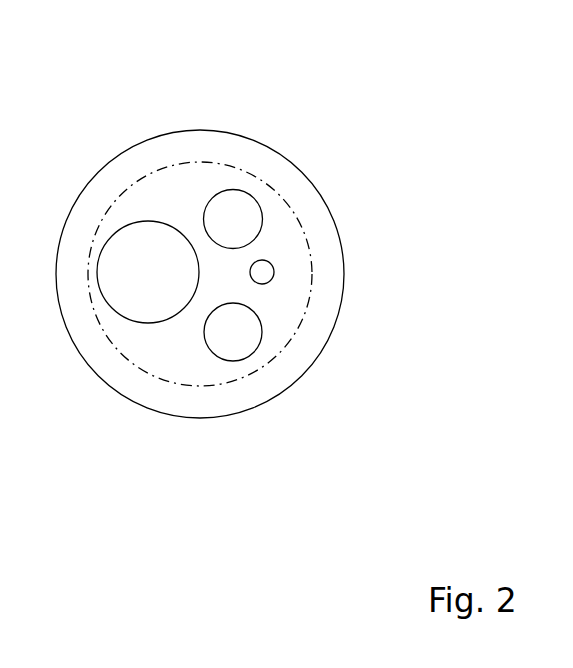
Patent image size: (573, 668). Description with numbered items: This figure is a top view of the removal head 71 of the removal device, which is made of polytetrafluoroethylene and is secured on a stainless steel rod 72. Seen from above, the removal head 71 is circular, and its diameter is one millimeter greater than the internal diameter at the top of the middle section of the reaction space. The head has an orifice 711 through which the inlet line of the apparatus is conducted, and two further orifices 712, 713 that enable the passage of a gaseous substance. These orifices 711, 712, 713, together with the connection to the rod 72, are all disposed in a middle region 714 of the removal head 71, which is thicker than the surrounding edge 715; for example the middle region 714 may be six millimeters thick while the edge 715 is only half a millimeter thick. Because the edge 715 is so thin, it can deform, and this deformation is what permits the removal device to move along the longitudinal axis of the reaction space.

The removal head 71 is at (212, 283).
The orifice 711 is at (135, 302).
The orifice 712 is at (232, 205).
The orifice 713 is at (237, 347).
The middle region 714 is at (190, 365).
The edge 715 is at (105, 190).
The rod 72 is at (267, 283).